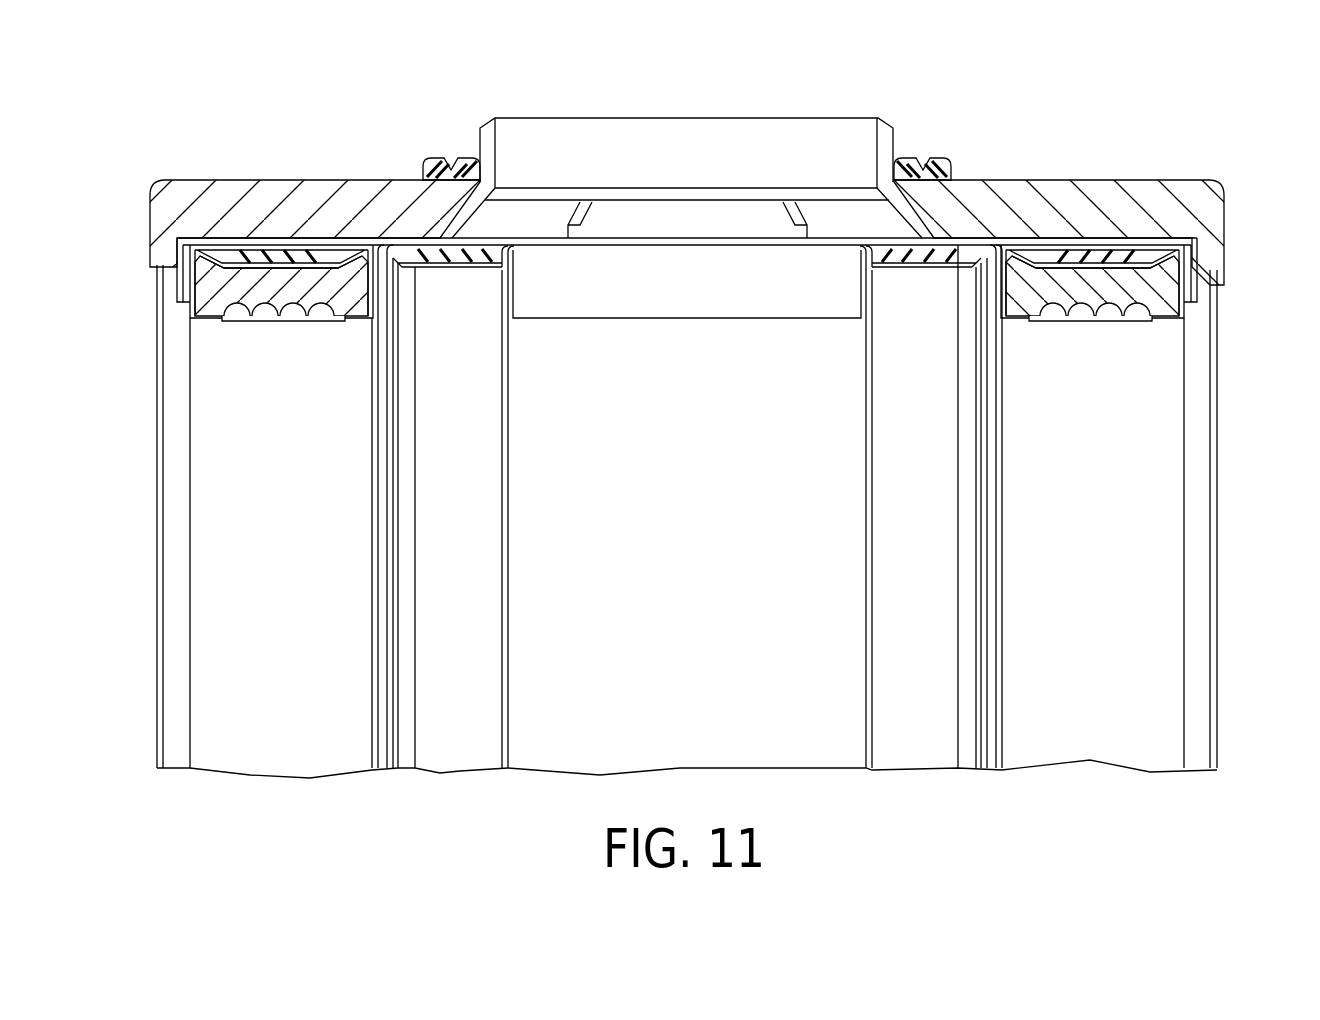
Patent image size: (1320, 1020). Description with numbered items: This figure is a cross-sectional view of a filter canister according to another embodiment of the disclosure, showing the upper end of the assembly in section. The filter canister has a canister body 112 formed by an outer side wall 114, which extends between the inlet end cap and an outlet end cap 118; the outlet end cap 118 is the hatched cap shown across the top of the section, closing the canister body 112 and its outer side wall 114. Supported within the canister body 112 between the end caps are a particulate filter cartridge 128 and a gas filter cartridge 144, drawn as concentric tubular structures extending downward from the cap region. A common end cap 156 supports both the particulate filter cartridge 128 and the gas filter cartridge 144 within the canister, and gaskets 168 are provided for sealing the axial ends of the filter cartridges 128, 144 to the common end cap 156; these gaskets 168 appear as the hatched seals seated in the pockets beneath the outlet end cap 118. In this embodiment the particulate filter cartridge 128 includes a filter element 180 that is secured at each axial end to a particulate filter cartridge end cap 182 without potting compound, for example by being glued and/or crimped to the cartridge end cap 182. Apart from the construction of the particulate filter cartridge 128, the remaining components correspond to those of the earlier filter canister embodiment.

The canister body 112 is at (150, 441).
The outer side wall 114 is at (158, 560).
The outlet end cap 118 is at (379, 188).
The particulate filter cartridge 128 is at (920, 742).
The gas filter cartridge 144 is at (1124, 489).
The common end cap 156 is at (1155, 247).
The gaskets 168 is at (287, 257).
The filter element 180 is at (888, 485).
The particulate filter cartridge end cap 182 is at (855, 253).